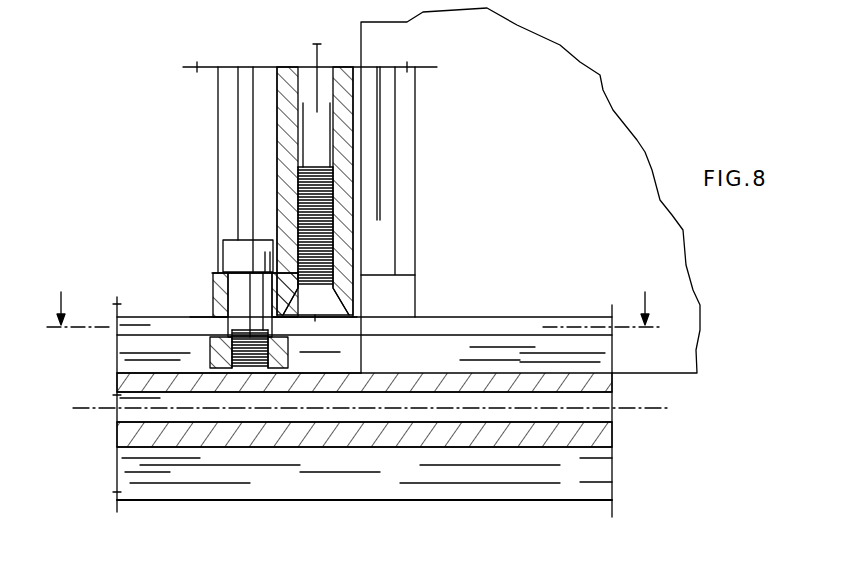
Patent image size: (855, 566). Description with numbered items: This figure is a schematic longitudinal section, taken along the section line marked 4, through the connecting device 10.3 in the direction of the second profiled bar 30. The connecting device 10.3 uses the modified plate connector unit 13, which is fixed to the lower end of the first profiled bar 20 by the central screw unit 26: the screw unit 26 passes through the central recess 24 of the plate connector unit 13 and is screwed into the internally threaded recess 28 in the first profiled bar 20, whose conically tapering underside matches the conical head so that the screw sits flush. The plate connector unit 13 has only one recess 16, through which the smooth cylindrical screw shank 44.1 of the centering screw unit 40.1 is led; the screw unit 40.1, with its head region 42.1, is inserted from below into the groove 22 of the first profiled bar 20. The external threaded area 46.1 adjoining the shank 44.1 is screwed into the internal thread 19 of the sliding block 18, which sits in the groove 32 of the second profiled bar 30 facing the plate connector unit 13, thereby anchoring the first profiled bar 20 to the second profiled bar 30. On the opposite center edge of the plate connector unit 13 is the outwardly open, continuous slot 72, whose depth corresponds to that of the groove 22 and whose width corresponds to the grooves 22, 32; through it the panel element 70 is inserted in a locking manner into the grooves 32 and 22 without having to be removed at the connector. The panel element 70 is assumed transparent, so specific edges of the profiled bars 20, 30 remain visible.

The section line 4 is at (353, 297).
The connecting device 10.3 is at (152, 213).
The plate connector unit 13 is at (270, 230).
The recess 16 is at (216, 287).
The sliding block 18 is at (228, 340).
The internal thread 19 is at (212, 352).
The first profiled bar 20 is at (415, 144).
The groove 22 is at (262, 82).
The central recess 24 is at (220, 292).
The screw unit 26 is at (362, 213).
The recess 28 is at (337, 193).
The second profiled bar 30 is at (612, 431).
The groove 32 is at (535, 347).
The screw unit 40.1 is at (218, 252).
The washer 42.1 is at (226, 240).
The screw shank 44.1 is at (275, 321).
The external threaded area 46.1 is at (215, 394).
The panel element 70 is at (615, 135).
The slot 72 is at (393, 276).